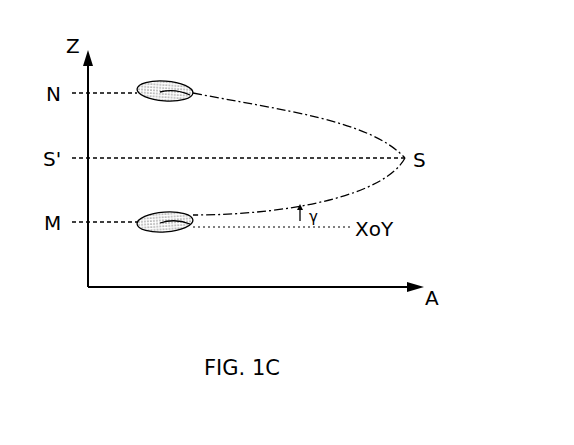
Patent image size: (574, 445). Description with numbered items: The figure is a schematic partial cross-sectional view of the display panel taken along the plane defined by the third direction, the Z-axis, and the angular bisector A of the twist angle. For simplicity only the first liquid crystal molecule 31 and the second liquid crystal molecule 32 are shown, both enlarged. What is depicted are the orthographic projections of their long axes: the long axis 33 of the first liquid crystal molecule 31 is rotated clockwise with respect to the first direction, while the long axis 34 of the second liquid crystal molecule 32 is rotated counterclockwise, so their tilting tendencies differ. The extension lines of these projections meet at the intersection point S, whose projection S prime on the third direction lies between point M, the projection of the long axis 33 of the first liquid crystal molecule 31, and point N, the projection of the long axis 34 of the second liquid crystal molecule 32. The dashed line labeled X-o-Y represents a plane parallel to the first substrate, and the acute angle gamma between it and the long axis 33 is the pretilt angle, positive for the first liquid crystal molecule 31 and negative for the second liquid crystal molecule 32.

The first liquid crystal molecule 31 is at (158, 232).
The second liquid crystal molecule 32 is at (147, 81).
The long axis of the first liquid crystal molecule 33 is at (172, 224).
The long axis of the second liquid crystal molecule 34 is at (190, 92).